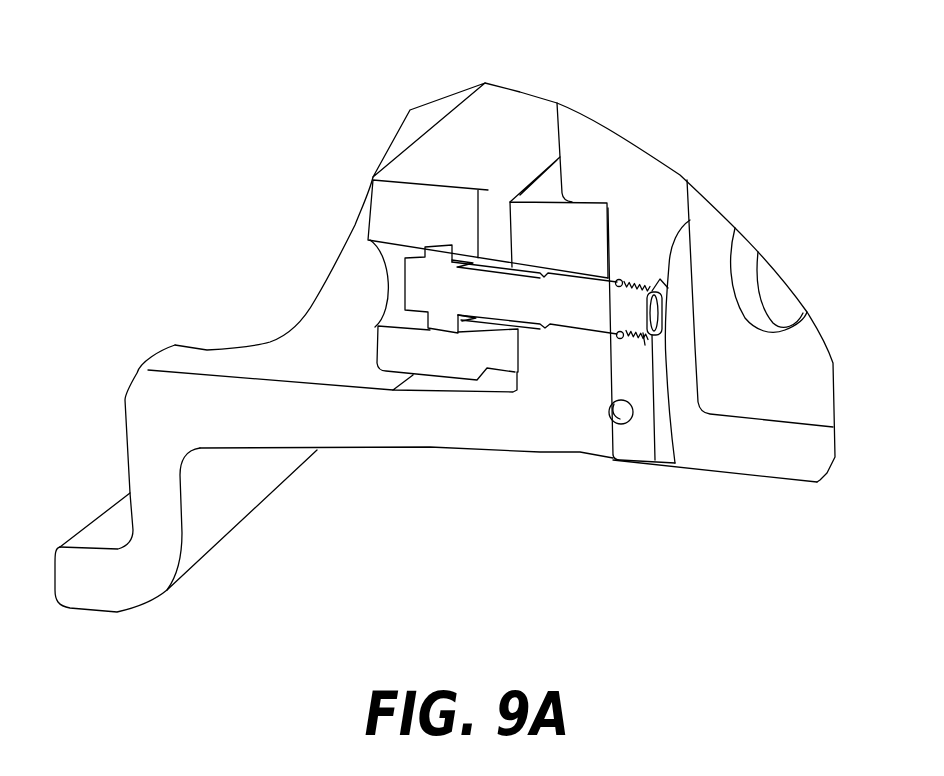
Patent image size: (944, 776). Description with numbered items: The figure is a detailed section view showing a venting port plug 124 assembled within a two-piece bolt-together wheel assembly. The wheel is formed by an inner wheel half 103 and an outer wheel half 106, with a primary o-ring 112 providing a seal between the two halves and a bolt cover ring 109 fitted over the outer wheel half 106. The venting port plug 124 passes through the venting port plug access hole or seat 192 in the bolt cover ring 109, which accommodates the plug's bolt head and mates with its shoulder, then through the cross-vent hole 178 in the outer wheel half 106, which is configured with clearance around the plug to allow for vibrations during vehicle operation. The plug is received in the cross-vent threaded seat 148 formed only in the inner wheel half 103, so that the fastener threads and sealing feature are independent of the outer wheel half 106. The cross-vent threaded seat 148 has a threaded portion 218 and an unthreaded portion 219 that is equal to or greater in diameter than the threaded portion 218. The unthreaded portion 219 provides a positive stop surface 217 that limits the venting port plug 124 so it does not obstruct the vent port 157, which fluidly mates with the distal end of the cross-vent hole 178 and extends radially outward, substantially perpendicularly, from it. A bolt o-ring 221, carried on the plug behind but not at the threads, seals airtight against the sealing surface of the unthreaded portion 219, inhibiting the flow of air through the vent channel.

The inner wheel half 103 is at (731, 503).
The outer wheel half 106 is at (458, 483).
The bolt cover ring 109 is at (510, 95).
The primary o-ring 112 is at (616, 426).
The venting port plug 124 is at (403, 285).
The cross-vent threaded seat 148 is at (690, 220).
The vent port 157 is at (666, 460).
The cross-vent hole 178 is at (582, 268).
The venting port plug access hole or seat 192 is at (510, 227).
The positive stop surface 217 is at (645, 345).
The threaded portion 218 is at (628, 338).
The unthreaded portion 219 is at (619, 339).
The bolt o-ring 221 is at (618, 279).